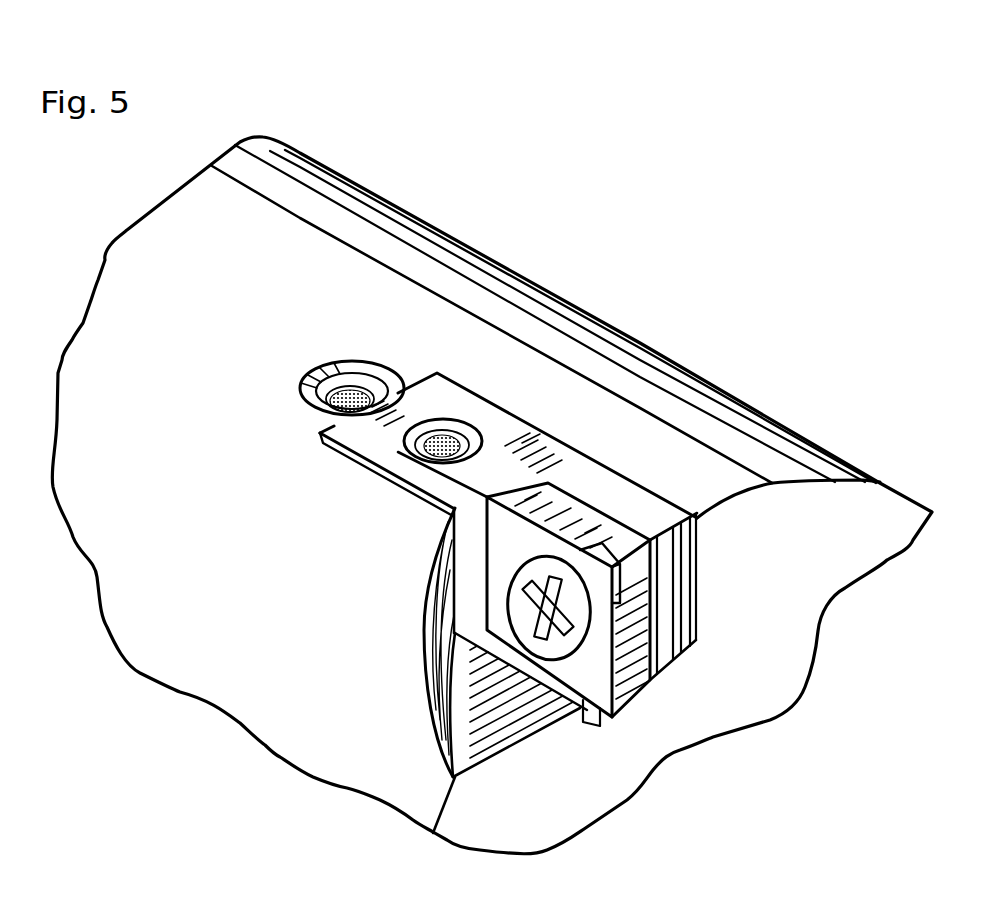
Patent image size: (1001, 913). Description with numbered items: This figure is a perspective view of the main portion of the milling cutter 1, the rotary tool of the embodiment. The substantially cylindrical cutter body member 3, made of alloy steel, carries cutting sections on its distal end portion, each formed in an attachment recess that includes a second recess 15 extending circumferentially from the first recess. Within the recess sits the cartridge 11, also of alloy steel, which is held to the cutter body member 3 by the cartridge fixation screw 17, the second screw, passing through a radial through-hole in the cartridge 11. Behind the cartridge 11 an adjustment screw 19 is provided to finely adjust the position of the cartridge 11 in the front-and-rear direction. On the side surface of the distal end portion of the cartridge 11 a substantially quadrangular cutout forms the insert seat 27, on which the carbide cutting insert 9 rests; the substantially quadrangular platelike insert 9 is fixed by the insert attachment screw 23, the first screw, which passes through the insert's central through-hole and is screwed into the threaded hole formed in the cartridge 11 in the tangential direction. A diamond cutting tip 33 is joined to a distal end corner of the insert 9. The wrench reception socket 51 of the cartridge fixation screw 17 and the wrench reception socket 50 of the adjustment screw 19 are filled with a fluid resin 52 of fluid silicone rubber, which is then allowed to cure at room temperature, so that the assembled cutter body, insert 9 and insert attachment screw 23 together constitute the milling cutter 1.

The milling cutter 1 is at (734, 310).
The cutter body member 3 is at (270, 707).
The cutting insert 9 is at (640, 678).
The cartridge 11 is at (437, 491).
The second recess 15 is at (470, 732).
The cartridge fixation screw 17 is at (457, 428).
The adjustment screw 19 is at (367, 382).
The insert attachment screw 23 is at (518, 610).
The insert seat 27 is at (653, 623).
The cutting tip 33 is at (623, 573).
The wrench reception socket of the adjustment screw 50 is at (308, 372).
The wrench reception socket of the cartridge fixation screw 51 is at (497, 413).
The fluid resin 52 is at (308, 410).